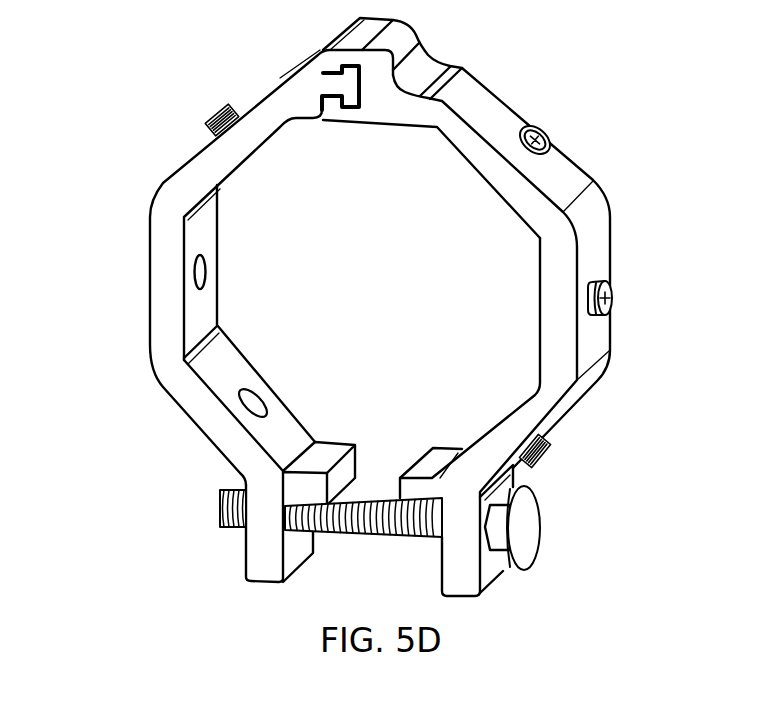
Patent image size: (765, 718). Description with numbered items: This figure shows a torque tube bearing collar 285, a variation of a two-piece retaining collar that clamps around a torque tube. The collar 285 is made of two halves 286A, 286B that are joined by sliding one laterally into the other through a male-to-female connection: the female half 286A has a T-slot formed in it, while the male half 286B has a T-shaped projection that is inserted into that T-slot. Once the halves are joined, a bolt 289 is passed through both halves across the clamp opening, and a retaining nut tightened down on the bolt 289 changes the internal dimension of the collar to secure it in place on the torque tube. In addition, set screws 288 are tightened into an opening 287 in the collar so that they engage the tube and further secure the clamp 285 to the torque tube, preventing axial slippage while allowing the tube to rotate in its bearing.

The collar 285 is at (180, 72).
The female half 286A is at (523, 106).
The male half 286B is at (160, 318).
The opening 287 is at (262, 400).
The set screws 288 is at (612, 282).
The bolt 289 is at (531, 528).